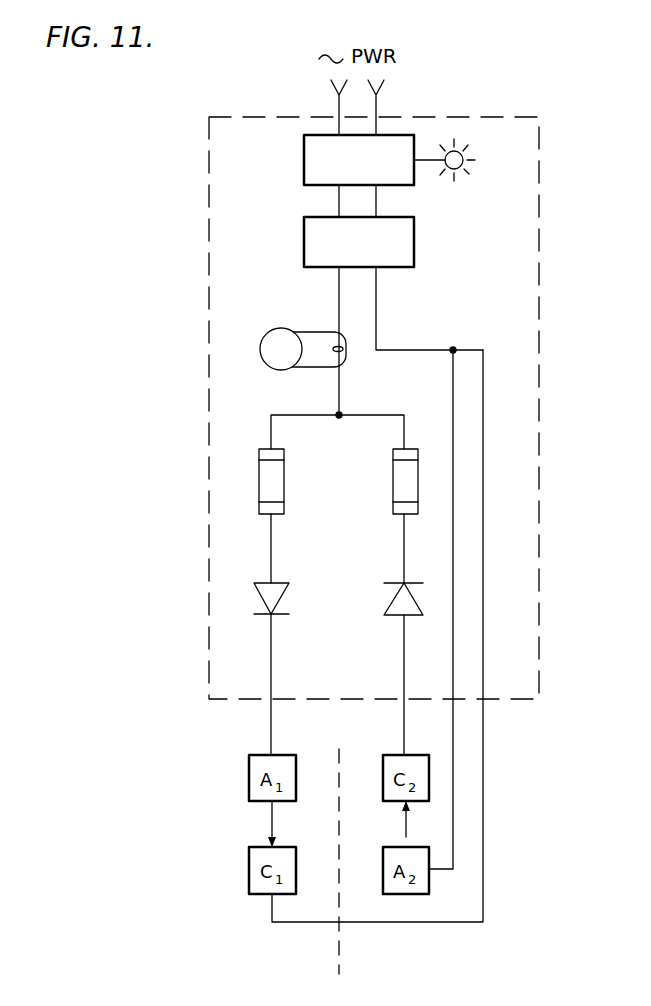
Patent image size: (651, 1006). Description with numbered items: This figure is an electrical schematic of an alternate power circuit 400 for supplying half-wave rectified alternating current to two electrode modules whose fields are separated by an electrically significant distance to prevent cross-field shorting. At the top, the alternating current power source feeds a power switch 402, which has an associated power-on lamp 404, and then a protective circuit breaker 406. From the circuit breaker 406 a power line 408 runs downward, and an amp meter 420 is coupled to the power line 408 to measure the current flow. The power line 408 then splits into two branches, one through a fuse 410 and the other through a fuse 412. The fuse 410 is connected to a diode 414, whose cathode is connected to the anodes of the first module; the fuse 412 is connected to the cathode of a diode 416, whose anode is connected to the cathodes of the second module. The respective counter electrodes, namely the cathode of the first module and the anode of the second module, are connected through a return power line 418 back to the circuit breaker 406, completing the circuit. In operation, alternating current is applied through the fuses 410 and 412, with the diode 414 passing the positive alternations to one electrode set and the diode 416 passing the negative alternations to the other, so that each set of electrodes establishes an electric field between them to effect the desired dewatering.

The power distribution unit 400 is at (176, 190).
The power switch 402 is at (303, 158).
The power on lamp 404 is at (461, 169).
The circuit breaker 406 is at (413, 230).
The power line 408 is at (338, 296).
The fuse 410 is at (284, 470).
The fuse 412 is at (392, 485).
The diode 414 is at (282, 578).
The diode 416 is at (398, 616).
The return power line 418 is at (375, 285).
The amp meter 420 is at (274, 371).